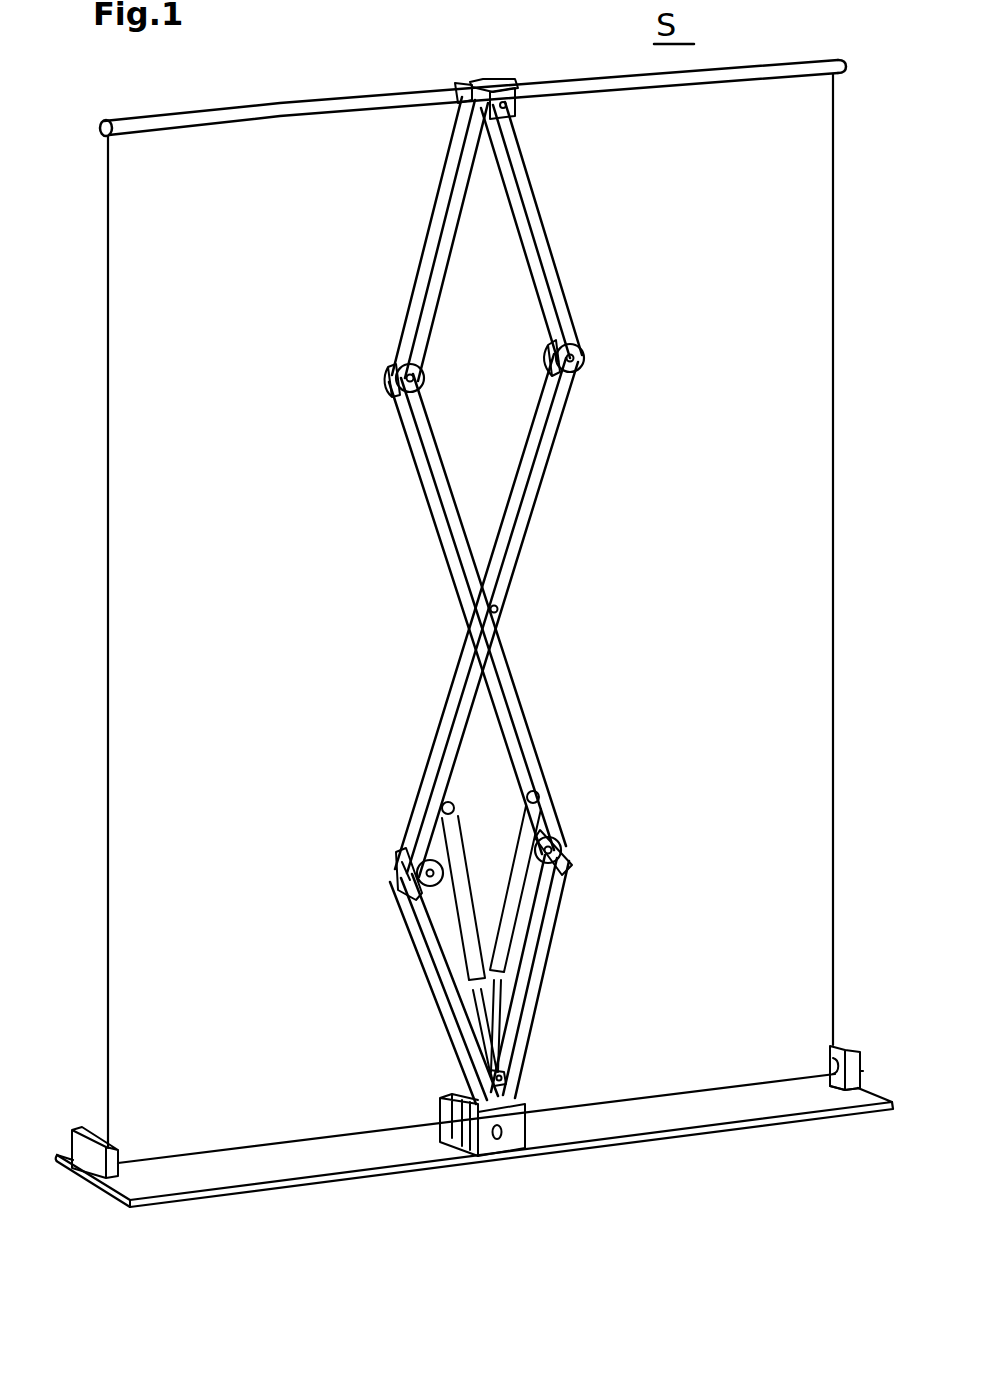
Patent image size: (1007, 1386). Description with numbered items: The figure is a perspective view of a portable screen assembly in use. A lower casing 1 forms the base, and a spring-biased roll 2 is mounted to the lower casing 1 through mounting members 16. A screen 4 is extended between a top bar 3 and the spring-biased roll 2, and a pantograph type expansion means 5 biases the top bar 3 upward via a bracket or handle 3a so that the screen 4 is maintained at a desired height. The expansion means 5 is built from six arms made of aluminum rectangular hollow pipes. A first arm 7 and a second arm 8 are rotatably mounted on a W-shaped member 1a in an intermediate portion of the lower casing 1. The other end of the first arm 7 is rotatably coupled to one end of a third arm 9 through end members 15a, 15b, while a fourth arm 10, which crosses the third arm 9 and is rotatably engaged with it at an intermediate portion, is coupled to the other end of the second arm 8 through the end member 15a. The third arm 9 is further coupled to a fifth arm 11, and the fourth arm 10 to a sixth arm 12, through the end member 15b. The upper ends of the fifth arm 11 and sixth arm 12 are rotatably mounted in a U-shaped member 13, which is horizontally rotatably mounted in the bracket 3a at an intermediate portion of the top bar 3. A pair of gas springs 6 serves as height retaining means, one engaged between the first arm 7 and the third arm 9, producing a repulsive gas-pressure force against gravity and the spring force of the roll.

The lower casing 1 is at (690, 1112).
The W-shaped member 1a is at (510, 1150).
The spring-biased roll 2 is at (843, 1092).
The top bar 3 is at (650, 86).
The bracket 3a is at (468, 100).
The screen 4 is at (162, 695).
The pantograph type expansion means 5 is at (586, 290).
The gas springs 6 is at (470, 921).
The first arm 7 is at (430, 992).
The second arm 8 is at (535, 972).
The third arm 9 is at (446, 690).
The fourth arm 10 is at (520, 690).
The fifth arm 11 is at (546, 223).
The sixth arm 12 is at (440, 223).
The U-shaped member 13 is at (516, 108).
The end member 15a is at (560, 830).
The end member 15b is at (588, 365).
The mounting members 16 is at (846, 1050).